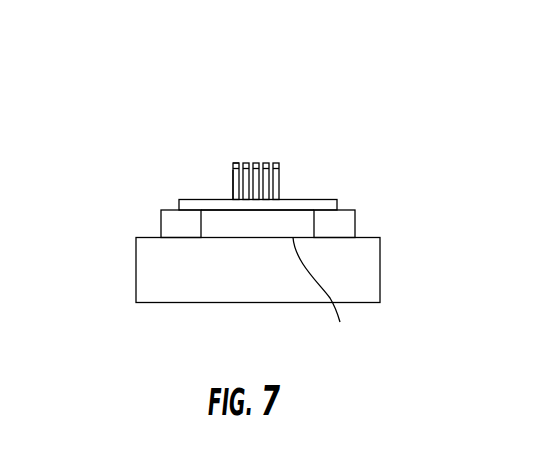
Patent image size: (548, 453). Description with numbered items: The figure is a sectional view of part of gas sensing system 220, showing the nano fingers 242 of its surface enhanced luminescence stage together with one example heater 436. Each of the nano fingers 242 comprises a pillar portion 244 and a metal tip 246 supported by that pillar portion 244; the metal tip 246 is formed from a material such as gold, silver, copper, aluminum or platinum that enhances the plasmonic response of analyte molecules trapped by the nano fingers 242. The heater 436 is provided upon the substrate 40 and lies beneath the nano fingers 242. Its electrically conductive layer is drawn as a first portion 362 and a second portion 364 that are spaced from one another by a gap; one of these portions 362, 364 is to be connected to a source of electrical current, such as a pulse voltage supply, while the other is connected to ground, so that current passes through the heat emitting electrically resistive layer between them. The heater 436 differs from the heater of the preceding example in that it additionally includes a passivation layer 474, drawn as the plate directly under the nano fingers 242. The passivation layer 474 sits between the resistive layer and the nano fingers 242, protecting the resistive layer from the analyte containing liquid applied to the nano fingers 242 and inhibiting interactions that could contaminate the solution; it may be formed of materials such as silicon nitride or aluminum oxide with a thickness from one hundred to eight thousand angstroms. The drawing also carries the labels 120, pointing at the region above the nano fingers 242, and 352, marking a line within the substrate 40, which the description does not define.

The system 220 is at (97, 125).
The connector 120 is at (346, 129).
The metal tip 246 is at (237, 168).
The nano fingers 242 is at (285, 167).
The pillar portion 244 is at (232, 178).
The passivation layer 474 is at (317, 200).
The heater 436 is at (361, 202).
The first portion 362 is at (161, 223).
The second portion 364 is at (355, 223).
The cable 352 is at (324, 297).
The substrate 40 is at (380, 269).